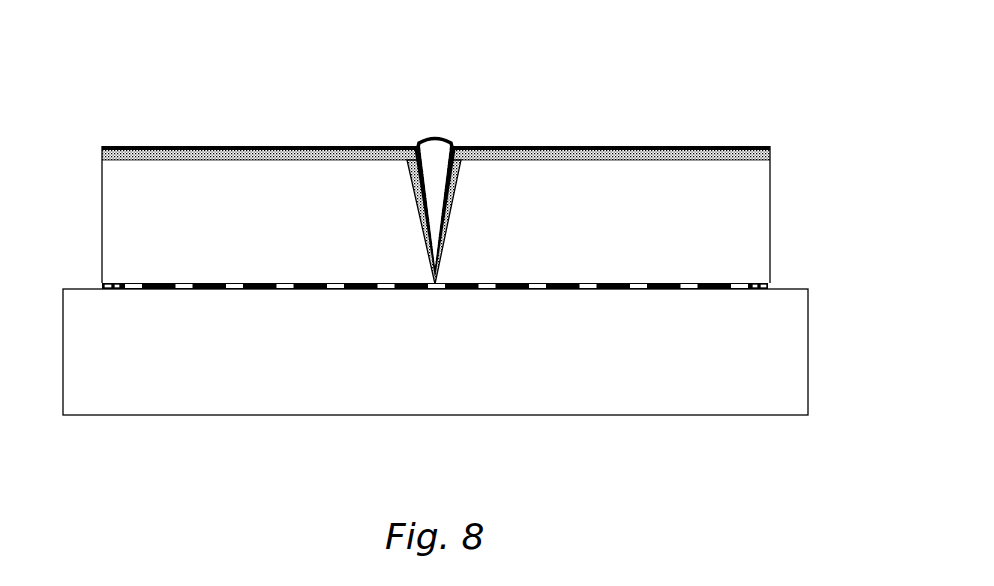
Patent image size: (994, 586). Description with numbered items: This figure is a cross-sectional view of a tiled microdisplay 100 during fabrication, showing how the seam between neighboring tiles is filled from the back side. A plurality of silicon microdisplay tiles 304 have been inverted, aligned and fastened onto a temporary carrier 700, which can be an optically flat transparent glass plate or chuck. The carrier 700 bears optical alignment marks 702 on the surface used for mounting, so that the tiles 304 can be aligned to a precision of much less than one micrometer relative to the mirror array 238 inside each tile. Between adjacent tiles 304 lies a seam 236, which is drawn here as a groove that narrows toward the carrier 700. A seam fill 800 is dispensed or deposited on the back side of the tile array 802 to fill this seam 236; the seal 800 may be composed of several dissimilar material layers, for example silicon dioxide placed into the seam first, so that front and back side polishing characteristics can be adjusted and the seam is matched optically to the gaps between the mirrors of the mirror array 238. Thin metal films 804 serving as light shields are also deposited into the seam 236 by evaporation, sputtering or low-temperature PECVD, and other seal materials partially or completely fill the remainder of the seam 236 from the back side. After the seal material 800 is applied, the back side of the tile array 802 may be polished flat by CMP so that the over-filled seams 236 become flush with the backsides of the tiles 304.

The tiled microdisplay 100 is at (726, 78).
The tile array 802 is at (790, 230).
The thin metal films 804 is at (566, 150).
The microdisplay tiles 304 is at (376, 178).
The seam fill 800 is at (437, 158).
The seam 236 is at (440, 197).
The mirror array 238 is at (268, 283).
The optical alignment marks 702 is at (118, 283).
The temporary carrier 700 is at (502, 397).